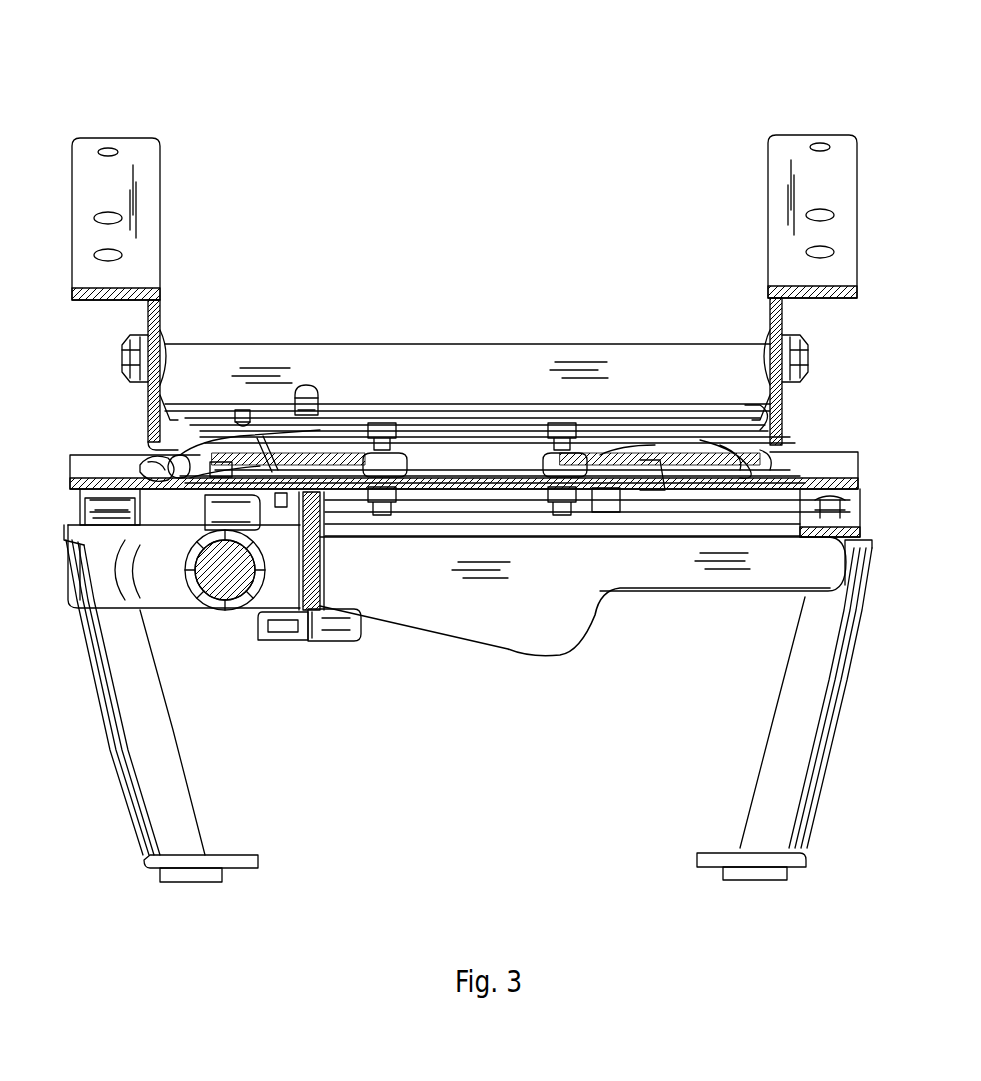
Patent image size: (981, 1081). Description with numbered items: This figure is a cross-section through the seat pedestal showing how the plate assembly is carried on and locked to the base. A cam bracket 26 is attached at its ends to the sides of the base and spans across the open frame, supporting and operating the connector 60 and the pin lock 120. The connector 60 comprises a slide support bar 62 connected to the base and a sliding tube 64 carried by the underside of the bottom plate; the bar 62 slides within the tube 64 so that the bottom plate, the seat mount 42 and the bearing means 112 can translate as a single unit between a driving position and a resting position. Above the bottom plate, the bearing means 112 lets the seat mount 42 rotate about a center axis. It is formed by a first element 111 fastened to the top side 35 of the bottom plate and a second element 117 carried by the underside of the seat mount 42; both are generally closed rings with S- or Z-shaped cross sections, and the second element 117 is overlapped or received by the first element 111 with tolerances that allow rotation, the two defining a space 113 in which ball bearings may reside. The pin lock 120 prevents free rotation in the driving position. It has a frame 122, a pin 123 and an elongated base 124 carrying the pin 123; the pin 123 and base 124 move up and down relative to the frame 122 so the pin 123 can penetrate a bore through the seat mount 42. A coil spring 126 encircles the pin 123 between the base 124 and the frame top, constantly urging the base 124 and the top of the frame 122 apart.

The cam bracket 26 is at (509, 650).
The top side of the bottom plate 35 is at (838, 452).
The seat mount 42 is at (802, 134).
The connector 60 is at (155, 620).
The slide support bar 62 is at (224, 610).
The sliding tube 64 is at (188, 598).
The first element 111 is at (722, 420).
The bearing means 112 is at (155, 460).
The space 113 is at (741, 440).
The second element 117 is at (190, 456).
The pin lock 120 is at (343, 648).
The frame 122 is at (250, 613).
The pin 123 is at (305, 385).
The elongated base 124 is at (320, 641).
The coil spring 126 is at (326, 548).